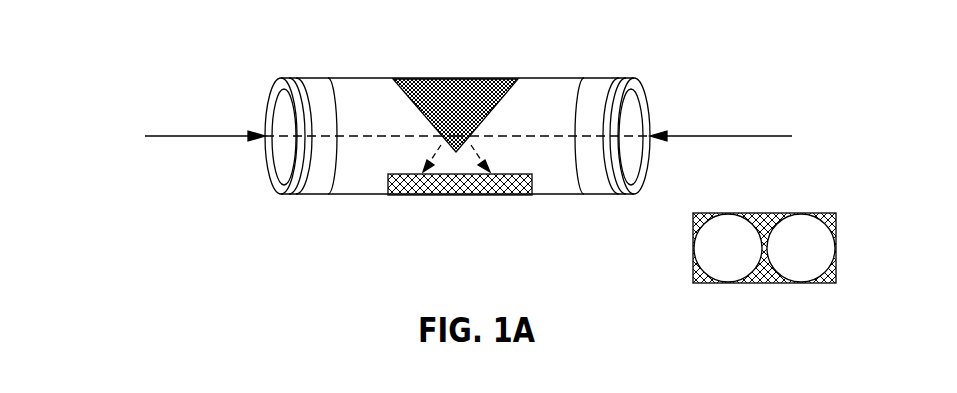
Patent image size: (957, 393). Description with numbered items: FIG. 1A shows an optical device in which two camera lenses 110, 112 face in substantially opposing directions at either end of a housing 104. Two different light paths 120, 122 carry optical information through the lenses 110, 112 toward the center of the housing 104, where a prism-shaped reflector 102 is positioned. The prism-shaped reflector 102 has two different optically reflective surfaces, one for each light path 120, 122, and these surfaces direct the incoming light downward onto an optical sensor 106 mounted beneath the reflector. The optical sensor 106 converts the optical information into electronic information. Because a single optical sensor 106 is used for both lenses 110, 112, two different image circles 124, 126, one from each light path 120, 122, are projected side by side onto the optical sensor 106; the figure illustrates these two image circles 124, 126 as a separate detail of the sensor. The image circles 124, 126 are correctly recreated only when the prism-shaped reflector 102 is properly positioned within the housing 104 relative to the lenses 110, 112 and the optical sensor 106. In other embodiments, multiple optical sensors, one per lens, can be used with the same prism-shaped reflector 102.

The prism-shaped reflector 102 is at (503, 79).
The housing 104 is at (372, 196).
The optical sensor 106 is at (612, 228).
The camera lens 110 is at (305, 78).
The camera lens 112 is at (607, 80).
The light path 120 is at (263, 123).
The light path 122 is at (629, 123).
The image circle 124 is at (712, 259).
The image circle 126 is at (801, 248).